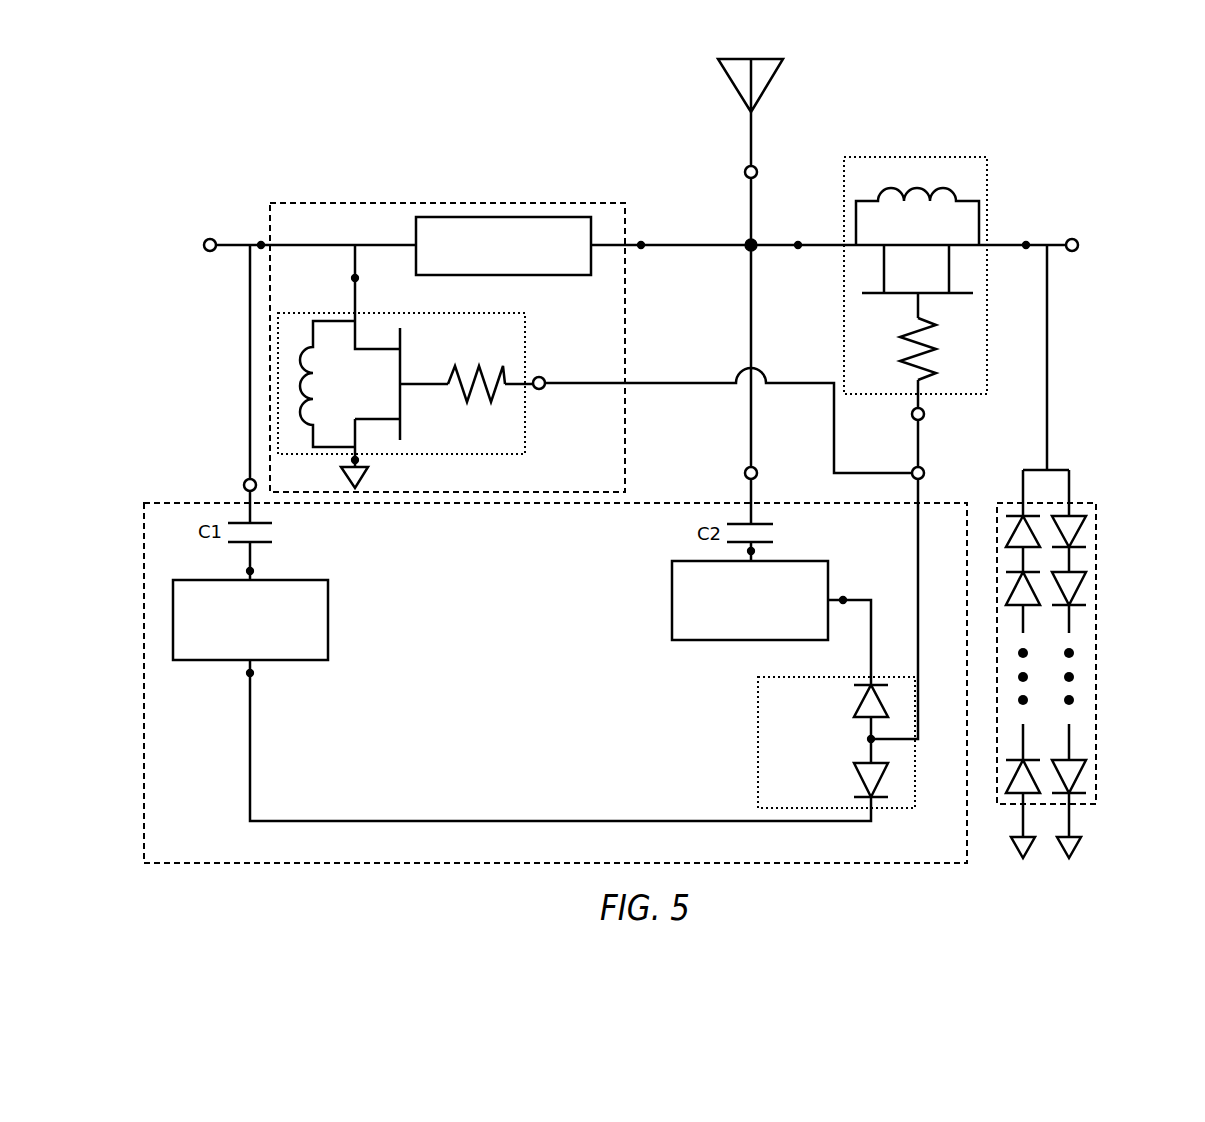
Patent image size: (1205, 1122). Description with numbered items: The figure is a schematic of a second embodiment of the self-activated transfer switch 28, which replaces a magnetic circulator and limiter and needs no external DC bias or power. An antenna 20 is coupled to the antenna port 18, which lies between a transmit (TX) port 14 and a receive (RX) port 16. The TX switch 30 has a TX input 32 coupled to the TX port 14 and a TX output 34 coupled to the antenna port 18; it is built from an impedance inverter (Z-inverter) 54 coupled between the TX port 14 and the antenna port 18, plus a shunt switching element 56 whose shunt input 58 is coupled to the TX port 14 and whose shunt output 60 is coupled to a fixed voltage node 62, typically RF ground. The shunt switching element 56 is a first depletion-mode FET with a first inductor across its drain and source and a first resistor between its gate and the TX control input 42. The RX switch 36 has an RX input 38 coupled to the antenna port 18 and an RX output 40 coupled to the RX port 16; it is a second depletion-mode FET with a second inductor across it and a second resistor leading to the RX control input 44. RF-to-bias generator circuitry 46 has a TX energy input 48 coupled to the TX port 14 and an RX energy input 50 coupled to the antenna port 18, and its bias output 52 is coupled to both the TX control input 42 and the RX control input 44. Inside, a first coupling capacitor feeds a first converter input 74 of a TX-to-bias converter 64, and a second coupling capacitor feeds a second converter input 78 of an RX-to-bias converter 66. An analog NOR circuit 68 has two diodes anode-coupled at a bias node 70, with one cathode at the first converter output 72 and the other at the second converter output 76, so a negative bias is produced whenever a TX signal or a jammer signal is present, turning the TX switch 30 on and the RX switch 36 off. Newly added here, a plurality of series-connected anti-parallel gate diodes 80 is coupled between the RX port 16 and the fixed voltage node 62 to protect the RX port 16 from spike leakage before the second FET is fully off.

The transmit (TX) port 14 is at (210, 252).
The receive (RX) port 16 is at (1075, 238).
The antenna port 18 is at (758, 167).
The antenna 20 is at (751, 135).
The self-activated transfer switch 28 is at (390, 126).
The TX switch 30 is at (447, 347).
The TX input 32 is at (261, 243).
The TX output 34 is at (641, 248).
The receive (RX) switch 36 is at (988, 292).
The RX input 38 is at (798, 243).
The RX output 40 is at (1026, 243).
The TX control input 42 is at (544, 378).
The RX control input 44 is at (913, 421).
The RF-to-bias generator circuitry 46 is at (555, 683).
The TX energy input 48 is at (245, 480).
The RX energy input 50 is at (757, 468).
The bias output 52 is at (924, 467).
The impedance inverter (Z-inverter) 54 is at (503, 246).
The shunt switching element 56 is at (401, 383).
The shunt input 58 is at (353, 279).
The shunt output 60 is at (352, 461).
The fixed voltage node 62 is at (365, 474).
The TX-to-bias converter 64 is at (250, 620).
The RX-to-bias converter 66 is at (750, 600).
The analog NOR circuit 68 is at (836, 742).
The bias node 70 is at (874, 741).
The first converter output 72 is at (248, 674).
The first converter input 74 is at (252, 570).
The second converter output 76 is at (845, 598).
The second converter input 78 is at (754, 551).
The plurality of series-connected anti-parallel gate diodes 80 is at (1093, 503).